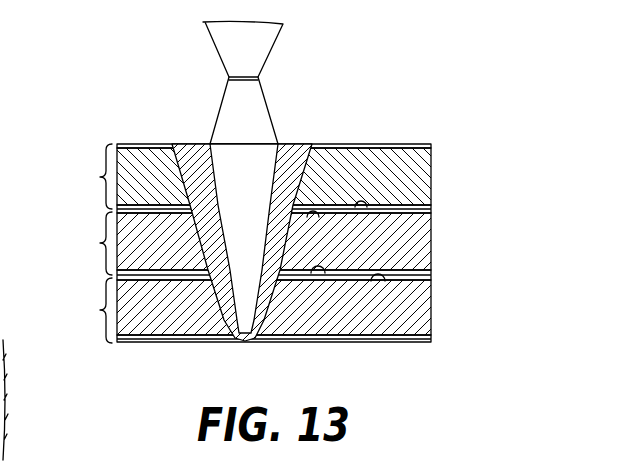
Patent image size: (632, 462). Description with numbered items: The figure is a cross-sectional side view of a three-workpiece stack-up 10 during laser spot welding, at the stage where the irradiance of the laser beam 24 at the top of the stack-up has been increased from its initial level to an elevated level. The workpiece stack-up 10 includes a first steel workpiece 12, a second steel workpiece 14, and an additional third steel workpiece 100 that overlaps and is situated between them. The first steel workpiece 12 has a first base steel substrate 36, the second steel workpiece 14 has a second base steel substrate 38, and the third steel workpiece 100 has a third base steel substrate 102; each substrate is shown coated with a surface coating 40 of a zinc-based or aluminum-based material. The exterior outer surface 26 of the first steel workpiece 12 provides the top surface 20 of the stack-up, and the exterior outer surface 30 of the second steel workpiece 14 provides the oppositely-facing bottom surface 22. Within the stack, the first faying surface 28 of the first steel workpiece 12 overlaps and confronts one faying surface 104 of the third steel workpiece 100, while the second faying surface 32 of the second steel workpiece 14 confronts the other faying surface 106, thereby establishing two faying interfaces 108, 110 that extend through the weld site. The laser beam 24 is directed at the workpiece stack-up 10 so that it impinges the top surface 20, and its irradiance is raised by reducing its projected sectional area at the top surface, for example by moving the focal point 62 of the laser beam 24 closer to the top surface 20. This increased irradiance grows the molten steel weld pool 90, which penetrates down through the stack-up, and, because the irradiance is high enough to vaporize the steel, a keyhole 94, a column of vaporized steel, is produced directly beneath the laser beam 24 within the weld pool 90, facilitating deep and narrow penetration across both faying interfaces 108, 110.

The workpiece stack-up 10 is at (64, 274).
The first steel workpiece 12 is at (100, 174).
The second steel workpiece 14 is at (100, 310).
The top surface 20 is at (332, 144).
The bottom surface 22 is at (328, 343).
The laser beam 24 is at (232, 42).
The exterior outer surface 26 is at (398, 145).
The first faying surface 28 is at (313, 217).
The exterior outer surface 30 is at (408, 343).
The second faying surface 32 is at (318, 267).
The first base steel substrate 36 is at (431, 178).
The second base steel substrate 38 is at (403, 298).
The surface coating 40 is at (431, 147).
The focal point 62 is at (243, 72).
The molten steel weld pool 90 is at (183, 172).
The keyhole 94 is at (240, 173).
The third steel workpiece 100 is at (100, 243).
The third base steel substrate 102 is at (433, 244).
The faying surface 104 is at (362, 210).
The faying surface 106 is at (372, 277).
The faying interface 108 is at (178, 220).
The faying interface 110 is at (193, 290).